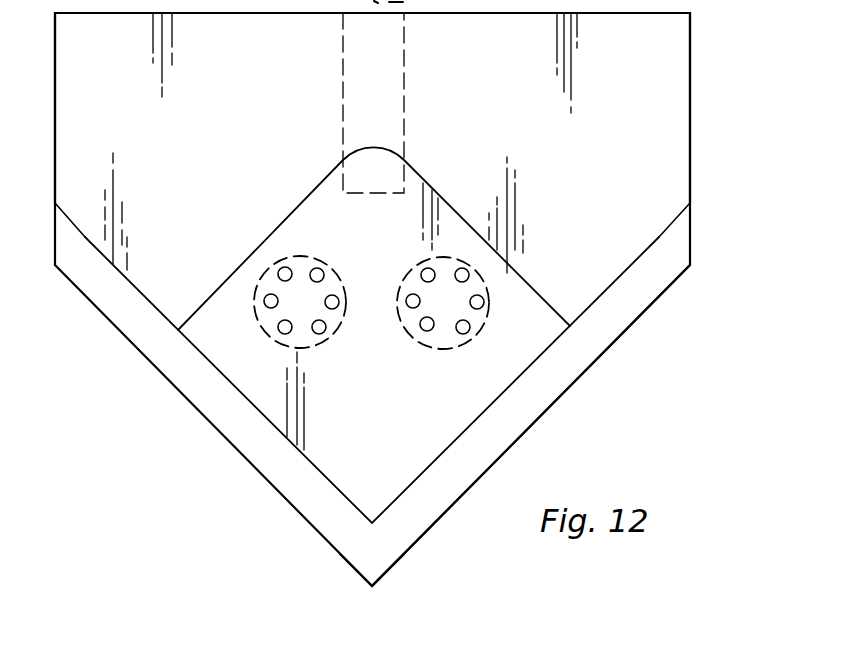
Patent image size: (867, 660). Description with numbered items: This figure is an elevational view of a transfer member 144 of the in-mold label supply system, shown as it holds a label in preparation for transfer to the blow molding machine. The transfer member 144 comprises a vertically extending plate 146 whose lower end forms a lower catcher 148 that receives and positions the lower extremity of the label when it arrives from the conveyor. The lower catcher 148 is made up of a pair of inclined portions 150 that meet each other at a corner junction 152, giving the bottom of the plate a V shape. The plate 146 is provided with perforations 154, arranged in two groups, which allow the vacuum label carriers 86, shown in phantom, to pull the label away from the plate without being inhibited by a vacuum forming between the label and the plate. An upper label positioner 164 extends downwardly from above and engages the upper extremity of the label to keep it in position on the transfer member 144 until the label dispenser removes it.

The label carrier 86 is at (483, 330).
The transfer member 144 is at (697, 154).
The plate 146 is at (677, 105).
The lower catcher 148 is at (543, 415).
The inclined portion 150 is at (291, 482).
The corner junction 152 is at (378, 552).
The perforation 154 is at (266, 322).
The upper label positioner 164 is at (404, 80).